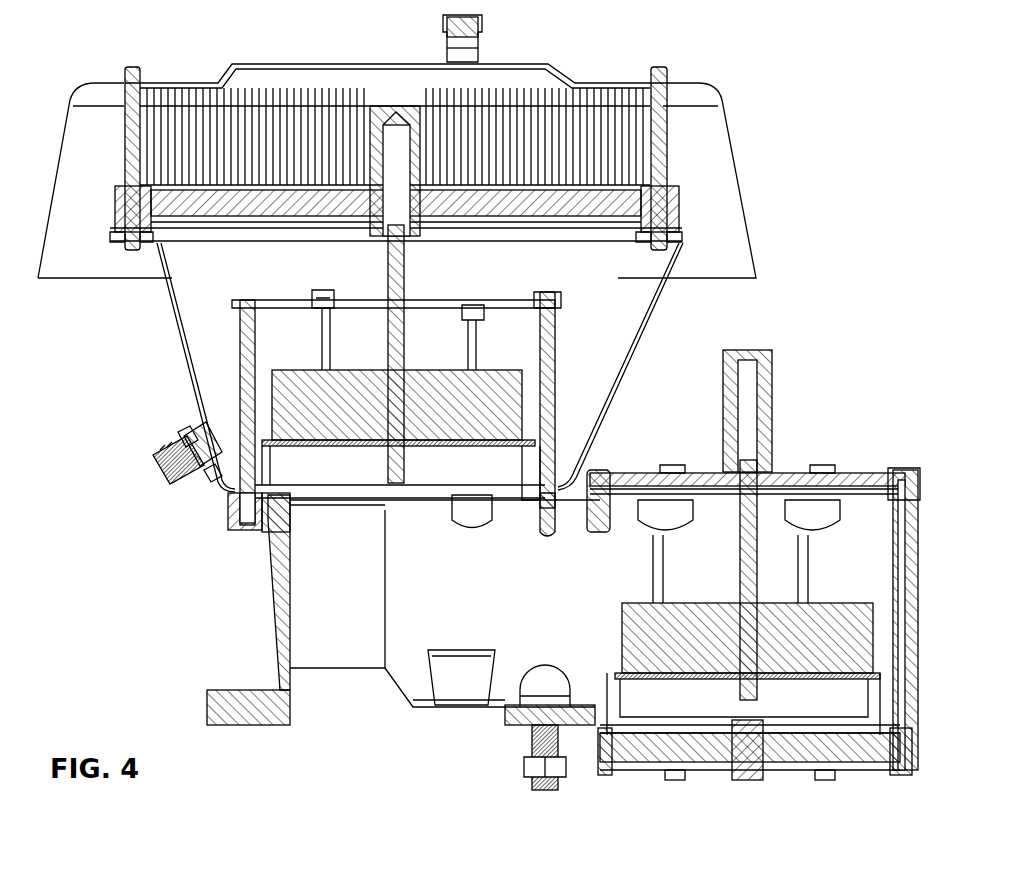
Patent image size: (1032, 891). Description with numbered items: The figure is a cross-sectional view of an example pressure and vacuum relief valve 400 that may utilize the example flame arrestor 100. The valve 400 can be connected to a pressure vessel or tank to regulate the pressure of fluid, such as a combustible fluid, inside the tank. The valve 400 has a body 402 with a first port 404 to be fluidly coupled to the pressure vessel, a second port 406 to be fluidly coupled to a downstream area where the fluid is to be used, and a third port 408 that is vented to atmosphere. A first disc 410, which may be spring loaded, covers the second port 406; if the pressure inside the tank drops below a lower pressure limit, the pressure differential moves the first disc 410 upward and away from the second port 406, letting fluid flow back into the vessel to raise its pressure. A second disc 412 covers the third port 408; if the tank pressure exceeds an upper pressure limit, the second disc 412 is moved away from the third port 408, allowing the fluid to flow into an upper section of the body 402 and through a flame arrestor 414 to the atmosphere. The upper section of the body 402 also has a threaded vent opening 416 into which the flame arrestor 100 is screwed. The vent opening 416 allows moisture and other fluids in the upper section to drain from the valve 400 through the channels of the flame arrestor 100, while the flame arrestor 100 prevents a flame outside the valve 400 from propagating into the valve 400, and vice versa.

The pressure and vacuum relief valve 400 is at (128, 42).
The flame arrestor 414 is at (620, 205).
The second disc 412 is at (498, 398).
The vent opening 416 is at (192, 432).
The flame arrestor 100 is at (148, 456).
The third port 408 is at (346, 488).
The body 402 is at (268, 590).
The first port 404 is at (344, 700).
The first disc 410 is at (635, 615).
The second port 406 is at (652, 680).